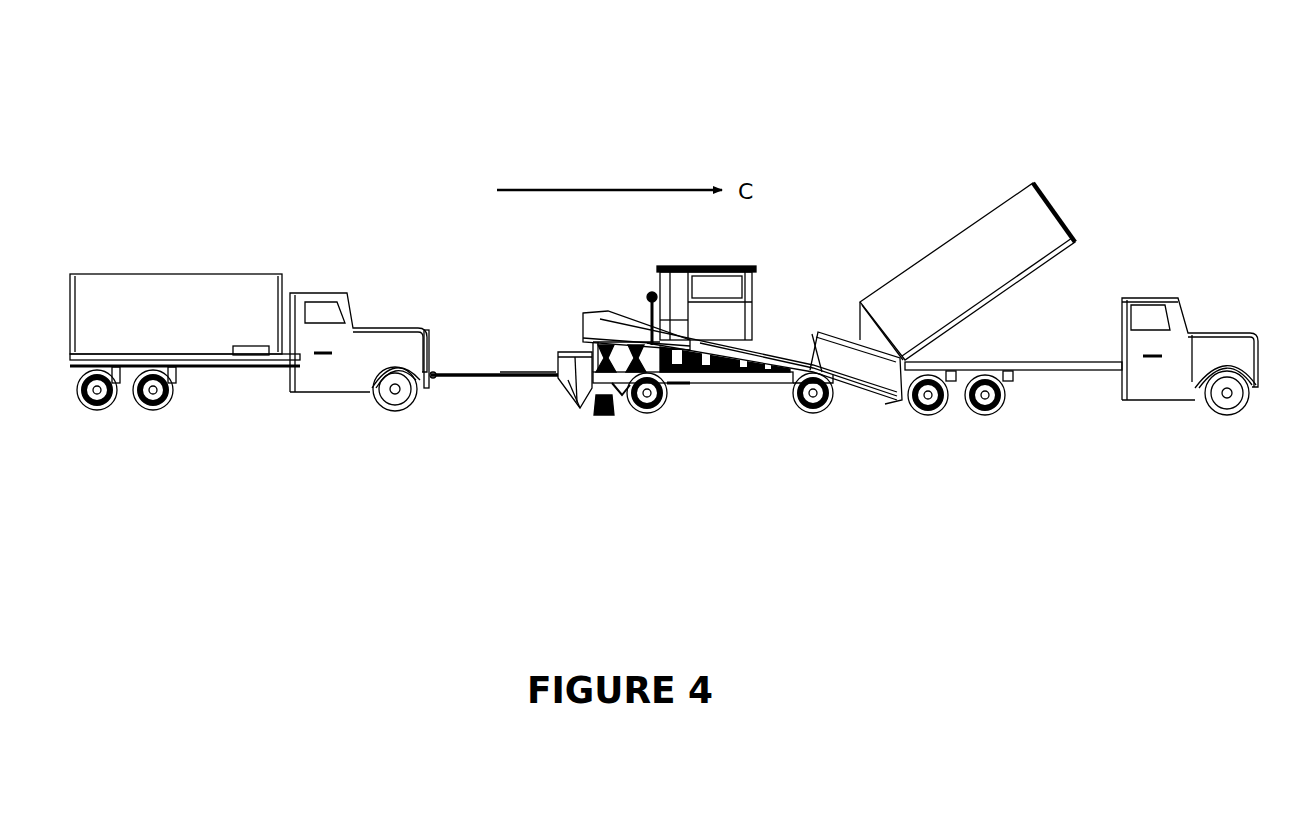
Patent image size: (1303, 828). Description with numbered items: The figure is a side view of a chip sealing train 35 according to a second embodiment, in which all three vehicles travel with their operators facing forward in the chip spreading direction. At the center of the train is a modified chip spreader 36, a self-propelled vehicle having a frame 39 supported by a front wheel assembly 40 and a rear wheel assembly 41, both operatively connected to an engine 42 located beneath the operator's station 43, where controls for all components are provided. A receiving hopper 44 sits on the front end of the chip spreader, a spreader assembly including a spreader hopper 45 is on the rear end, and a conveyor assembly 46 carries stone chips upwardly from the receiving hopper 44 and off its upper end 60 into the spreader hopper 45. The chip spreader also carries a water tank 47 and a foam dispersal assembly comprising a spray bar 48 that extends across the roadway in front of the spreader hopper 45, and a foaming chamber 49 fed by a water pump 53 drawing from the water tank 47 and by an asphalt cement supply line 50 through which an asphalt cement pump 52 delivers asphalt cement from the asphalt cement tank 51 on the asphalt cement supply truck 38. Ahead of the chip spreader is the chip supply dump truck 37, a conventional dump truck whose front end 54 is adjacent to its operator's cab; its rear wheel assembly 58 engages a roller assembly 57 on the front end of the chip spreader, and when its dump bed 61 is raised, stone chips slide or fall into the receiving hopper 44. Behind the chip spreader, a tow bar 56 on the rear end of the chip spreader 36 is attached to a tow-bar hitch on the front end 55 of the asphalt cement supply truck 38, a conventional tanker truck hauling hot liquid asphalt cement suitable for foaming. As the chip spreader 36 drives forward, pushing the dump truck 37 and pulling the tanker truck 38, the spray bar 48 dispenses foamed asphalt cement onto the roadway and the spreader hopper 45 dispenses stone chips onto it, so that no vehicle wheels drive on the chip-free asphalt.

The chip sealing train 35 is at (878, 100).
The modified chip spreader 36 is at (822, 220).
The chip supply dump truck 37 is at (1137, 256).
The asphalt cement supply truck 38 is at (361, 304).
The frame 39 is at (752, 398).
The front wheel assembly 40 is at (822, 420).
The rear wheel assembly 41 is at (652, 416).
The engine 42 is at (697, 383).
The operator's station 43 is at (735, 262).
The receiving hopper 44 is at (838, 322).
The spreader hopper 45 is at (568, 401).
The conveyor assembly 46 is at (765, 347).
The water tank 47 is at (676, 386).
The spray bar 48 is at (602, 401).
The foaming chamber 49 is at (619, 392).
The asphalt cement supply line 50 is at (505, 367).
The asphalt cement tank 51 is at (235, 265).
The asphalt cement pump 52 is at (585, 355).
The water pump 53 is at (637, 352).
The front end 54 is at (1260, 322).
The front end 55 is at (428, 318).
The tow bar 56 is at (452, 368).
The roller assembly 57 is at (905, 404).
The rear wheel assembly 58 is at (943, 418).
The upper end 60 is at (590, 309).
The dump bed 61 is at (1058, 202).